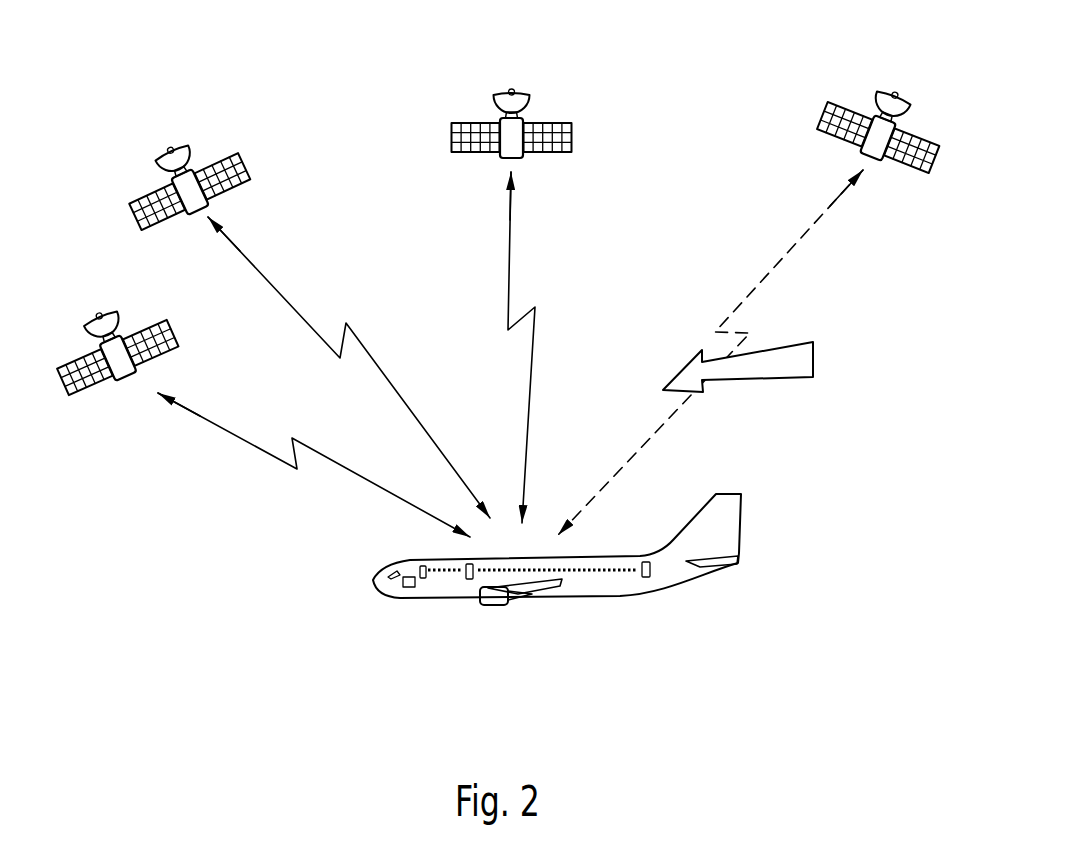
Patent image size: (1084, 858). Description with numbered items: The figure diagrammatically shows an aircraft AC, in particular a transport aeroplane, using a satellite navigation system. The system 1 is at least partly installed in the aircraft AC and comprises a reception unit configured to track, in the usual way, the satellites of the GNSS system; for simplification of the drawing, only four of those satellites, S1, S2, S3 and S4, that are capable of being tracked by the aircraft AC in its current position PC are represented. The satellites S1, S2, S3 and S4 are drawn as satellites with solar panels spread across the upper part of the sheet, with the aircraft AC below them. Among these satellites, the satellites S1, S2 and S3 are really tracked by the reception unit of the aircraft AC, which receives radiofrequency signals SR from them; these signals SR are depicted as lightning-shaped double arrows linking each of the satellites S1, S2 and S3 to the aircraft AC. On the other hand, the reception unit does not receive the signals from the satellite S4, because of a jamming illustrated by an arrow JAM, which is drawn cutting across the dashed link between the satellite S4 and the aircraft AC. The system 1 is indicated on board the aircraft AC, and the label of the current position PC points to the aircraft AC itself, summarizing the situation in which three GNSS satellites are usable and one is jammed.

The satellite S1 is at (98, 310).
The satellite S2 is at (165, 138).
The satellite S3 is at (522, 85).
The satellite S4 is at (902, 85).
The GNSS system GNSS is at (812, 115).
The radiofrequency signals SR is at (315, 335).
The jamming JAM is at (742, 380).
The aircraft AC is at (533, 600).
The system 1 is at (408, 588).
The current position PC is at (628, 604).